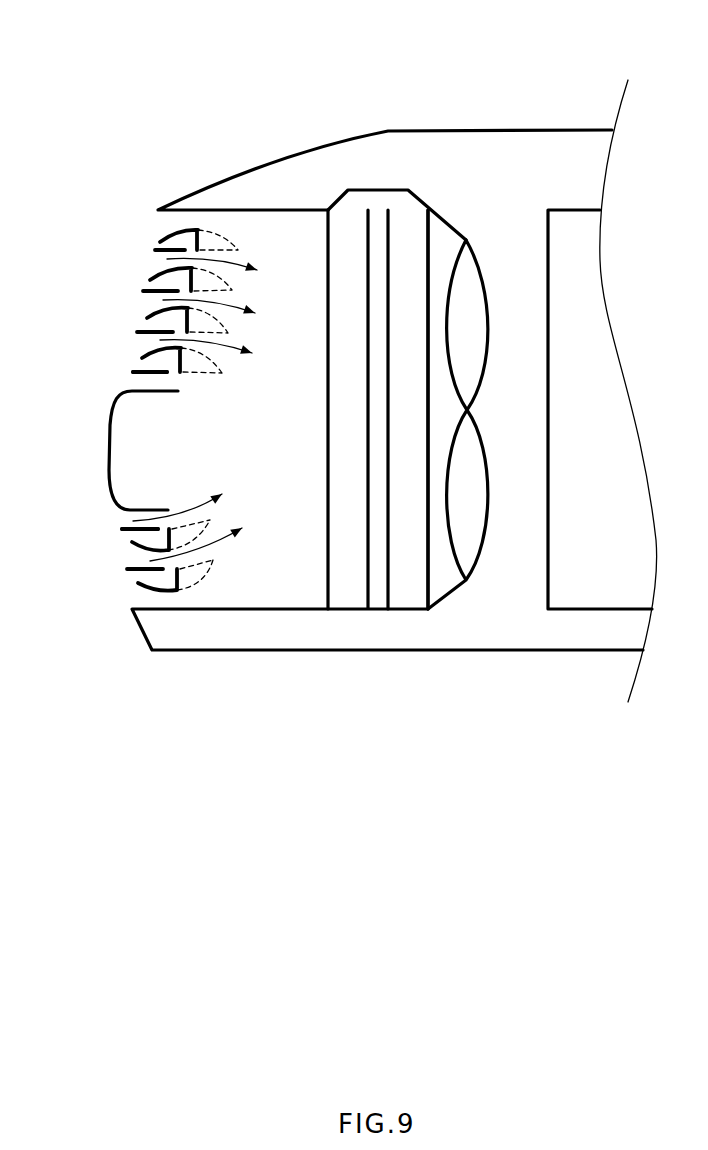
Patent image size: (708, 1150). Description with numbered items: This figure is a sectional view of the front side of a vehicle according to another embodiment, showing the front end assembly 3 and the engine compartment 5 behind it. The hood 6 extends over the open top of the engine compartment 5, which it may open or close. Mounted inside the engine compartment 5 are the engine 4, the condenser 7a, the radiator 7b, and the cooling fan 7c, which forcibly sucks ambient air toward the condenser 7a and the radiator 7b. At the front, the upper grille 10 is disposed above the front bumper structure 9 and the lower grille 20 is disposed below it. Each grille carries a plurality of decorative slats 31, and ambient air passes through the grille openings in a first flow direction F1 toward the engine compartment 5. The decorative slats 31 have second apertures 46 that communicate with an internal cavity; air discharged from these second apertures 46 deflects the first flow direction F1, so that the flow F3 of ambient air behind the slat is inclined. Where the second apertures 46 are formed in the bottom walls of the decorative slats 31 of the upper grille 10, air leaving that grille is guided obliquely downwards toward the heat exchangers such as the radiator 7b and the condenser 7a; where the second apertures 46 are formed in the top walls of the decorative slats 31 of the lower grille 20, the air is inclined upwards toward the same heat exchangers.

The front end assembly 3 is at (538, 92).
The engine 4 is at (599, 271).
The engine compartment 5 is at (492, 179).
The hood 6 is at (388, 130).
The condenser 7a is at (335, 585).
The radiator 7b is at (420, 582).
The cooling fan 7c is at (472, 538).
The front bumper structure 9 is at (108, 466).
The upper grille 10 is at (112, 272).
The lower grille 20 is at (110, 580).
The decorative slat 31 is at (170, 234).
The second aperture 46 is at (173, 374).
The first flow direction F1 is at (247, 264).
The flow of ambient air F3 is at (204, 378).